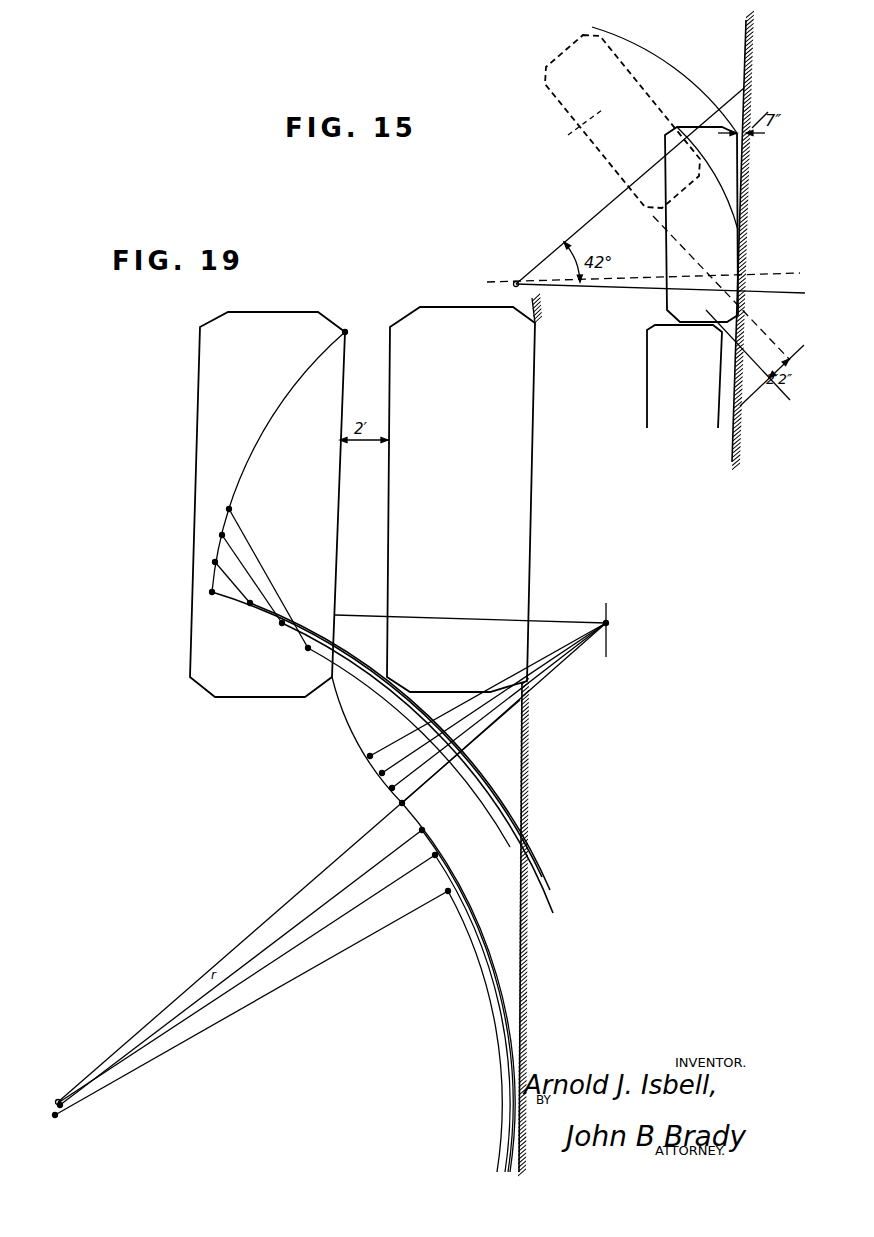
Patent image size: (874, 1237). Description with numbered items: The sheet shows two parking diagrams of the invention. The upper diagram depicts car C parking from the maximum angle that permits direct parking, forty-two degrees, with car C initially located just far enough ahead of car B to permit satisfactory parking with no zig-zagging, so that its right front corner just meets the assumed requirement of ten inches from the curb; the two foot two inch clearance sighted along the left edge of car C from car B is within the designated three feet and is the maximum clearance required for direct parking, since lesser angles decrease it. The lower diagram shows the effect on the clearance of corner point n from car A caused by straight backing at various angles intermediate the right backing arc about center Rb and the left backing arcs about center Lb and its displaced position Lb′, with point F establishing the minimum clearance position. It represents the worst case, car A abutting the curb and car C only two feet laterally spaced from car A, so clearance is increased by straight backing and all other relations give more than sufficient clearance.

In FIG. 15, the car C is at (641, 174).
In FIG. 19, the car C is at (267, 504).
In FIG. 19, the car A is at (461, 499).
In FIG. 15, the car B is at (684, 376).
In FIG. 19, the point F is at (470, 648).
In FIG. 19, the corner point n is at (290, 454).
In FIG. 19, the center Rb is at (488, 703).
In FIG. 15, the center Lb is at (520, 276).
In FIG. 19, the left pivot center, first position Lb′ is at (62, 1106).